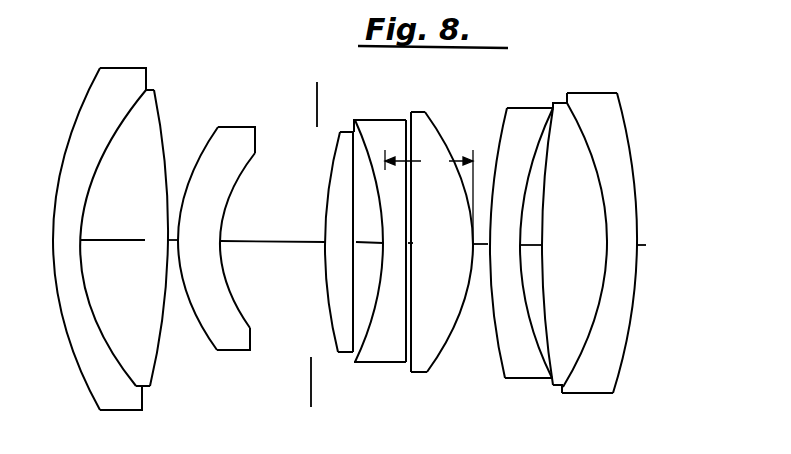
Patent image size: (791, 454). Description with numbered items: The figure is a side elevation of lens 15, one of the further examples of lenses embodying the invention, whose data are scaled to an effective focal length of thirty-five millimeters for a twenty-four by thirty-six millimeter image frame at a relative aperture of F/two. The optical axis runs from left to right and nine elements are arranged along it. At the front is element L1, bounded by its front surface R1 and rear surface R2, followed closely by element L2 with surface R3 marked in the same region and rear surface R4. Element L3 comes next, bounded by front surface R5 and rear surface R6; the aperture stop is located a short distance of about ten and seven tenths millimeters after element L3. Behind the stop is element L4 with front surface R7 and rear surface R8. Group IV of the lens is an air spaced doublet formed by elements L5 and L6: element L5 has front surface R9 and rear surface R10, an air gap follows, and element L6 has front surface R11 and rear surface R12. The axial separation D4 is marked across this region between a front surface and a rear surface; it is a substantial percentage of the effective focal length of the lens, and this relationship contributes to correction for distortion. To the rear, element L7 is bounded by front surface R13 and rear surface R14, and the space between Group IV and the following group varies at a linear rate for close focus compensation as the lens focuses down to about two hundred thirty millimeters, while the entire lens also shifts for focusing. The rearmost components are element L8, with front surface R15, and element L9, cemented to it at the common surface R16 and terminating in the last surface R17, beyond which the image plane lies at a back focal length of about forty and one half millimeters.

The lens 15 is at (653, 72).
The lens element L1 is at (113, 80).
The lens element L2 is at (153, 117).
The lens element L3 is at (230, 140).
The lens element L4 is at (335, 157).
The lens element L5 is at (375, 135).
The lens element L6 is at (427, 142).
The lens element L7 is at (517, 122).
The lens element L8 is at (562, 122).
The lens element L9 is at (602, 112).
The lens surface R1 is at (76, 358).
The lens surface R2 is at (105, 336).
The lens surface R3 is at (145, 265).
The lens surface R4 is at (158, 353).
The lens surface R5 is at (190, 300).
The lens surface R6 is at (235, 301).
The lens surface R7 is at (326, 282).
The lens surface R8 is at (353, 305).
The lens surface R9 is at (368, 322).
The lens surface R10 is at (406, 320).
The lens surface R11 is at (413, 302).
The lens surface R12 is at (464, 300).
The lens surface R13 is at (502, 362).
The lens surface R14 is at (540, 348).
The lens surface R15 is at (549, 350).
The lens surface R16 is at (575, 358).
The lens surface R17 is at (628, 340).
The axial separation D4 is at (429, 196).